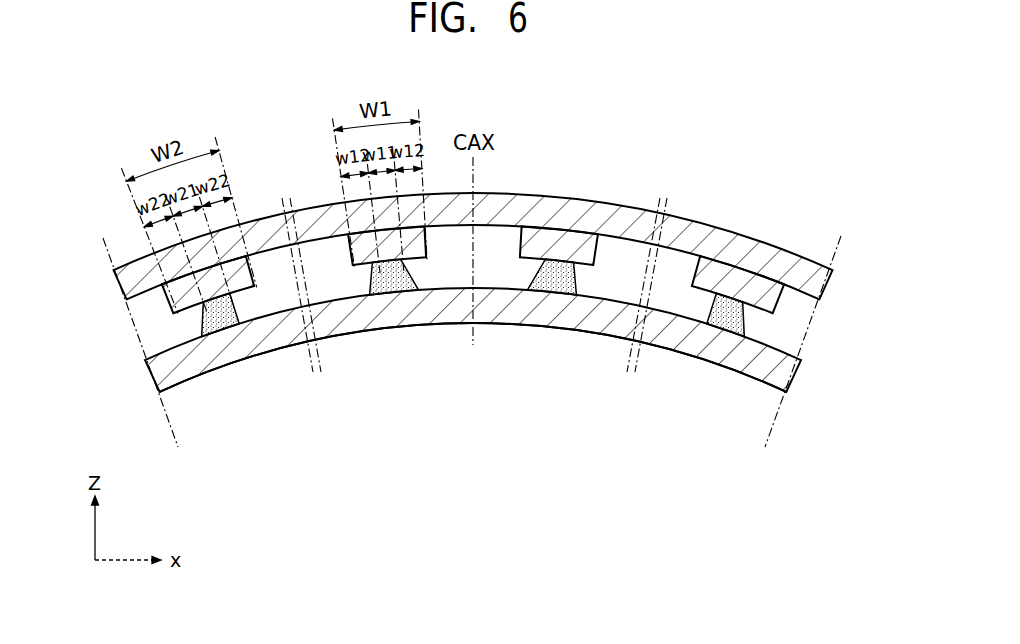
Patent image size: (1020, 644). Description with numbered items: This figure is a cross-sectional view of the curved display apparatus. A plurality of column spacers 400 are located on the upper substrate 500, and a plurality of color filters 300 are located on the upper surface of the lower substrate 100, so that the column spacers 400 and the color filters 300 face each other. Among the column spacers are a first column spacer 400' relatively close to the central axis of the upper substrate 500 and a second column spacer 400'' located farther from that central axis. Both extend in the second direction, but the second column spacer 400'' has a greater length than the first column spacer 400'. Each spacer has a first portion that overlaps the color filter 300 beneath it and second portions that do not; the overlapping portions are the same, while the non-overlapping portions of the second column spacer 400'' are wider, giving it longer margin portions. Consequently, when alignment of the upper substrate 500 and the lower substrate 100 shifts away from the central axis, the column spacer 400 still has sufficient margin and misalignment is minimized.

The lower substrate 100 is at (781, 375).
The color filter 300 is at (753, 329).
The column spacer 400 is at (785, 296).
The first column spacer 400' is at (415, 316).
The second column spacer 400'' is at (154, 298).
The upper substrate 500 is at (818, 284).